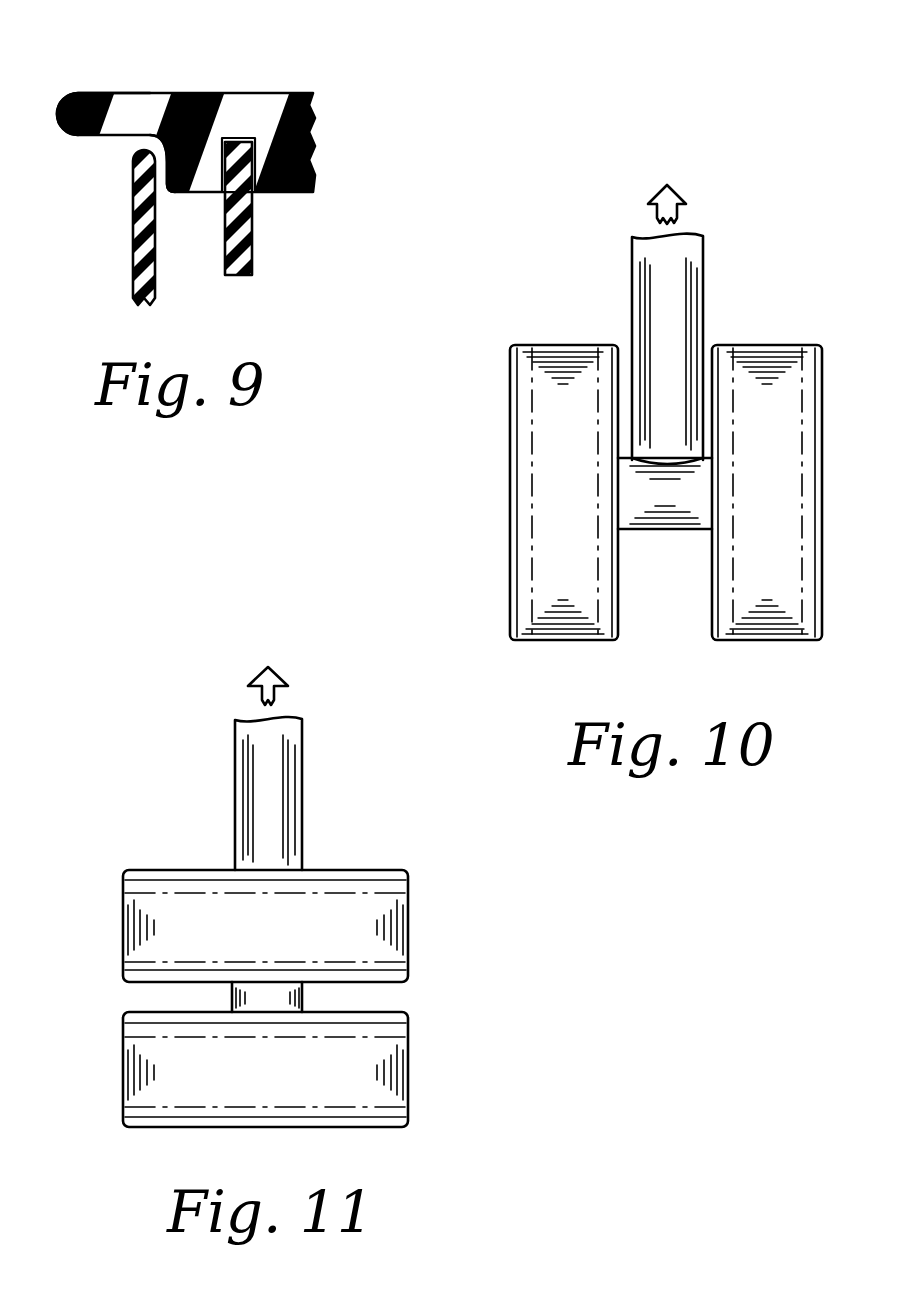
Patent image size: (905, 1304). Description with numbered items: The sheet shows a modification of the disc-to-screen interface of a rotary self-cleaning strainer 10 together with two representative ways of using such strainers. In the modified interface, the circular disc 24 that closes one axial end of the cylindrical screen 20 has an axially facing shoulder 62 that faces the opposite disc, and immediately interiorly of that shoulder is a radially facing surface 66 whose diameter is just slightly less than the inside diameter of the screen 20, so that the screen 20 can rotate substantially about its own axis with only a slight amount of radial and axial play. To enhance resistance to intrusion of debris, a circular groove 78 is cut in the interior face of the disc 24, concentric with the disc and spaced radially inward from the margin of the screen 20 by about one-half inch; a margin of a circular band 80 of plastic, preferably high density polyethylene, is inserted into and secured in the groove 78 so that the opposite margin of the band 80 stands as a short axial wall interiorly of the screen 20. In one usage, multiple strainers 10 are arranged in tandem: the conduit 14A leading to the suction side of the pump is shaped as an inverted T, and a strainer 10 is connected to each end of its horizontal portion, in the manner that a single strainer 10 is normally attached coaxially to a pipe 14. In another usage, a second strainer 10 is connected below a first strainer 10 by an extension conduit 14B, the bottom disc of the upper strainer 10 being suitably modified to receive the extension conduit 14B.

In FIG. 10, the rotary self-cleaning strainer 10 is at (510, 603).
In FIG. 11, the rotary self-cleaning strainer 10 is at (409, 925).
In FIG. 11, the pipe 14 is at (302, 777).
In FIG. 10, the conduit 14A is at (703, 270).
In FIG. 11, the extension conduit 14B is at (302, 1003).
In FIG. 9, the cylindrical screen 20 is at (135, 208).
In FIG. 9, the circular disc 24 is at (303, 115).
In FIG. 9, the axially facing shoulder 62 is at (105, 136).
In FIG. 9, the radially facing surface 66 is at (163, 172).
In FIG. 9, the circular groove 78 is at (253, 139).
In FIG. 9, the circular band 80 is at (250, 256).